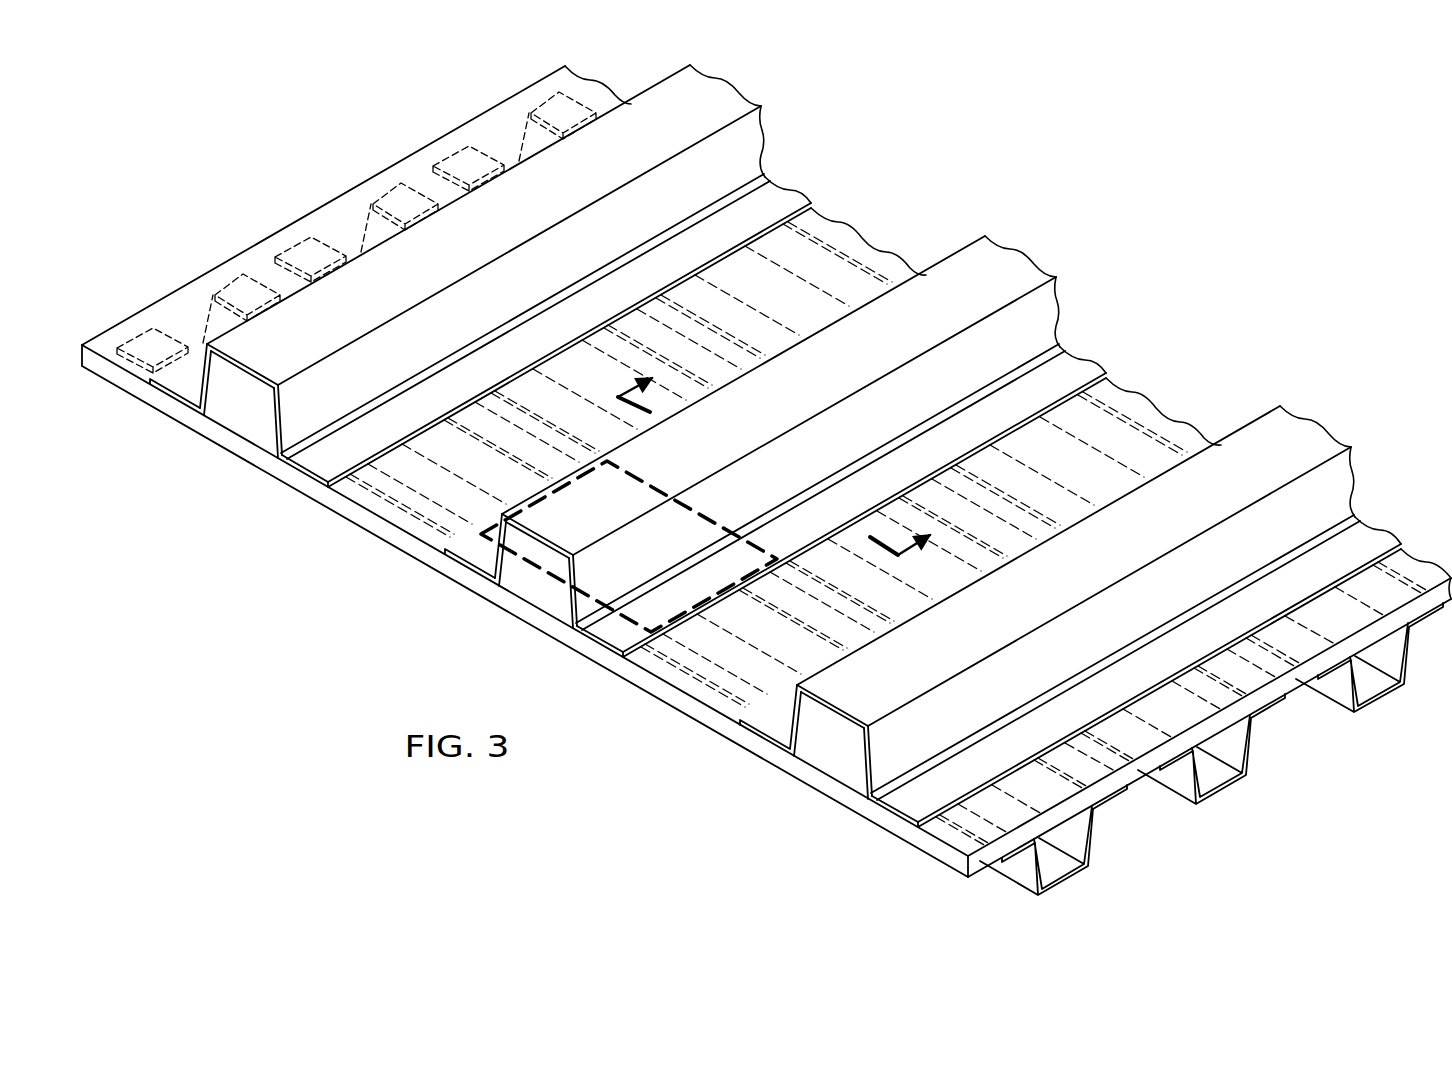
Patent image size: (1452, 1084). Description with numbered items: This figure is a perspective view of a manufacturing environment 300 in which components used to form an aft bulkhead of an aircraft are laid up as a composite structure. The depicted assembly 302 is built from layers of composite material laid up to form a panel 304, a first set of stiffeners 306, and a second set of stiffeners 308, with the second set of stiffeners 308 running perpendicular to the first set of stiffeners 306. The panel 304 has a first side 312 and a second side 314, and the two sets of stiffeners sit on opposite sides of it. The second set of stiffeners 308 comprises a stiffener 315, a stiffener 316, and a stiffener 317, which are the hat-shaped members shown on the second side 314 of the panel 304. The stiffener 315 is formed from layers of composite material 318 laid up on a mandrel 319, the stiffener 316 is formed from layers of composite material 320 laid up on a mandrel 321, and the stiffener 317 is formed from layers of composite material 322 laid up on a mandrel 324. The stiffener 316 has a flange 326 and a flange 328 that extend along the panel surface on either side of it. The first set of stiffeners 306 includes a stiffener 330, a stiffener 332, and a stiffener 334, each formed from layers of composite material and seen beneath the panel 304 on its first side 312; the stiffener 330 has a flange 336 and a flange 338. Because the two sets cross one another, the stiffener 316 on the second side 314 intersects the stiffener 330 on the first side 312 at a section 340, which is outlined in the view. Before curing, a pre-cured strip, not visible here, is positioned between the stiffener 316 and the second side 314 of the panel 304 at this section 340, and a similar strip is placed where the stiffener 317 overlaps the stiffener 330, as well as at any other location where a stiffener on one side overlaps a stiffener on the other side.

The manufacturing environment 300 is at (1239, 208).
The assembly 302 is at (255, 210).
The panel 304 is at (345, 190).
The first set of stiffeners 306 is at (1266, 785).
The second set of stiffeners 308 is at (1089, 278).
The first side 312 is at (123, 396).
The second side 314 is at (177, 308).
The stiffener 315 is at (1245, 426).
The stiffener 316 is at (956, 250).
The stiffener 317 is at (783, 152).
The layers of composite material 318 is at (1296, 435).
The mandrel 319 is at (830, 762).
The layers of composite material 320 is at (1019, 259).
The mandrel 321 is at (535, 590).
The layers of composite material 322 is at (757, 135).
The mandrel 324 is at (240, 418).
The flange 326 is at (470, 552).
The flange 328 is at (617, 635).
The stiffener 330 is at (1067, 887).
The stiffener 332 is at (1223, 795).
The stiffener 334 is at (1379, 705).
The flange 336 is at (1022, 859).
The flange 338 is at (1115, 800).
The section 340 is at (654, 483).